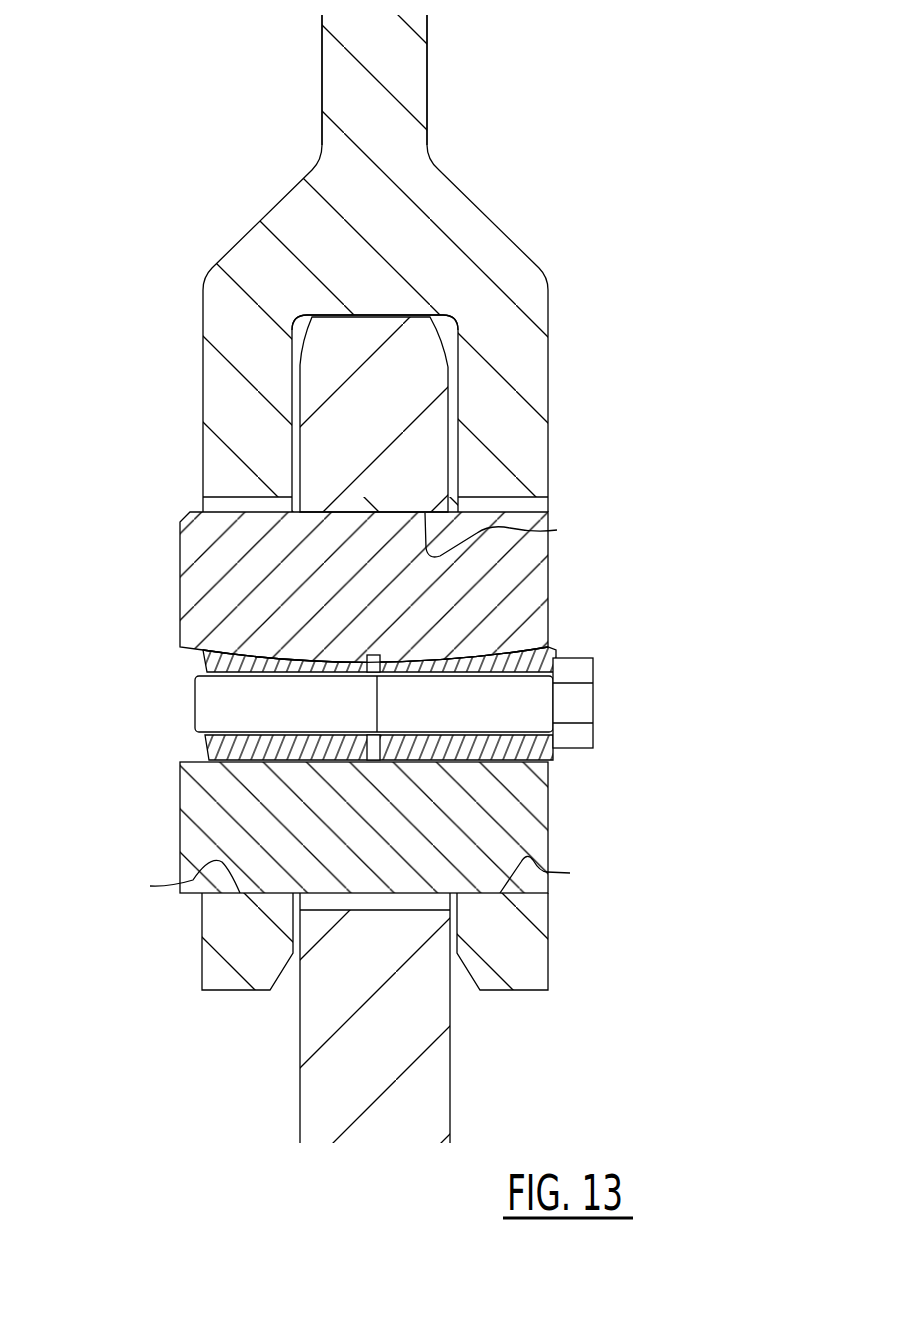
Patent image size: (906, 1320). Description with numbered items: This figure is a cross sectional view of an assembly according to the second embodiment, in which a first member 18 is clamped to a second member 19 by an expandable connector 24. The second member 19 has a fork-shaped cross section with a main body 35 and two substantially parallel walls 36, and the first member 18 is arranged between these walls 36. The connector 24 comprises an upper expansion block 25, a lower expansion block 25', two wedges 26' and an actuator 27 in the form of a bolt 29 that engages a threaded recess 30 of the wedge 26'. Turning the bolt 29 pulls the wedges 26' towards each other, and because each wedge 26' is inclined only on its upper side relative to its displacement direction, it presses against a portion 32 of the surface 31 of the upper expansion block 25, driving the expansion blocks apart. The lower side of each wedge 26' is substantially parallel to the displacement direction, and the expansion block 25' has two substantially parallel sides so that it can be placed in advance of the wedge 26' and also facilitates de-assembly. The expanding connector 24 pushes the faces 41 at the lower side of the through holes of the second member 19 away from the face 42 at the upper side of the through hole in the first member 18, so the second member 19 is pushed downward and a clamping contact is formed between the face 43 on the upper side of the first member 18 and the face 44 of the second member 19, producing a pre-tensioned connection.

The second member 19 is at (396, 501).
The main body 35 is at (395, 62).
The walls 36 is at (223, 397).
The face 43 is at (350, 355).
The face 44 is at (323, 355).
The connector 24 is at (410, 666).
The expansion block 25 is at (425, 584).
The face 42 is at (508, 534).
The wedge 26' is at (360, 668).
The surface 31 is at (319, 619).
The portion 32 is at (280, 657).
The threaded recess 30 is at (428, 692).
The actuator 27 is at (655, 692).
The bolt 29 is at (575, 705).
The expansion block 25' is at (342, 825).
The faces 41 is at (356, 876).
The first member 18 is at (360, 1068).